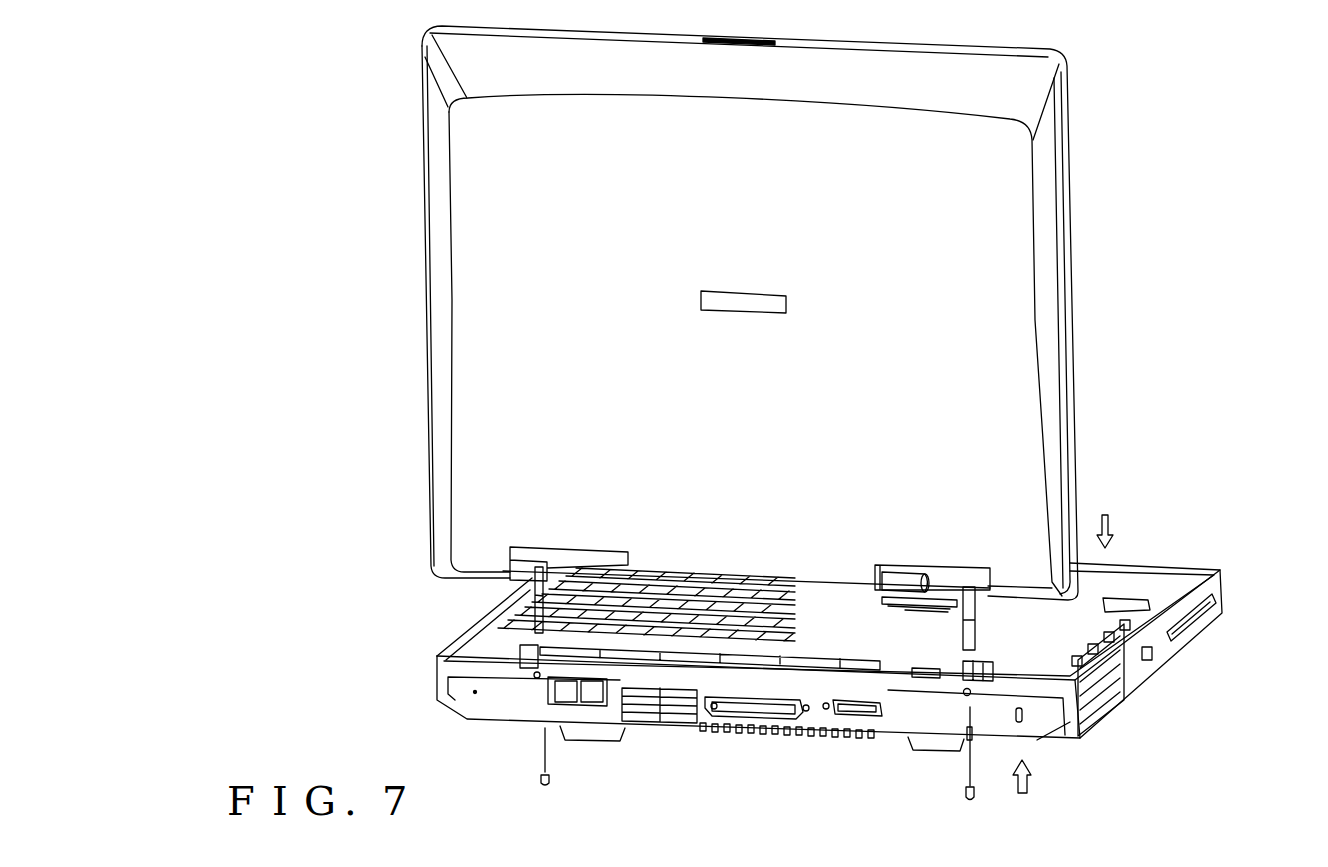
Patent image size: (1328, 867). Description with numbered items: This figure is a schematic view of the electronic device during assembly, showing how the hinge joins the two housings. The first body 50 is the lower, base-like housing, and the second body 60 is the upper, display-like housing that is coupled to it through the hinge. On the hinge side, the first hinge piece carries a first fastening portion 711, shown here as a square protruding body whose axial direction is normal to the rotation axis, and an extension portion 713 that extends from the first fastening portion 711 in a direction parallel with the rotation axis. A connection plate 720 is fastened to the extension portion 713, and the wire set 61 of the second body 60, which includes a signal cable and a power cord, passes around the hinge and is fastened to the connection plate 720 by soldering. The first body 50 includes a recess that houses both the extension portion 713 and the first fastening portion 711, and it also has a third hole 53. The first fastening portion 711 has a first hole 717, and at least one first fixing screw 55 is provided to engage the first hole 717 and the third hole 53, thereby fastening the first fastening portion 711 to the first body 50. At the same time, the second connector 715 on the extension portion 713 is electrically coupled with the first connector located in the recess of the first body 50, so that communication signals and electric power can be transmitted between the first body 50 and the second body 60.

The second body 60 is at (1110, 218).
The first body 50 is at (1243, 606).
The wire set 61 is at (898, 577).
The extension portion 713 is at (903, 560).
The connection plate 720 is at (888, 597).
The second connector 715 is at (910, 610).
The first fastening portion 711 is at (965, 627).
The first hole 717 is at (978, 659).
The third hole 53 is at (964, 696).
The first fixing screw 55 is at (963, 792).